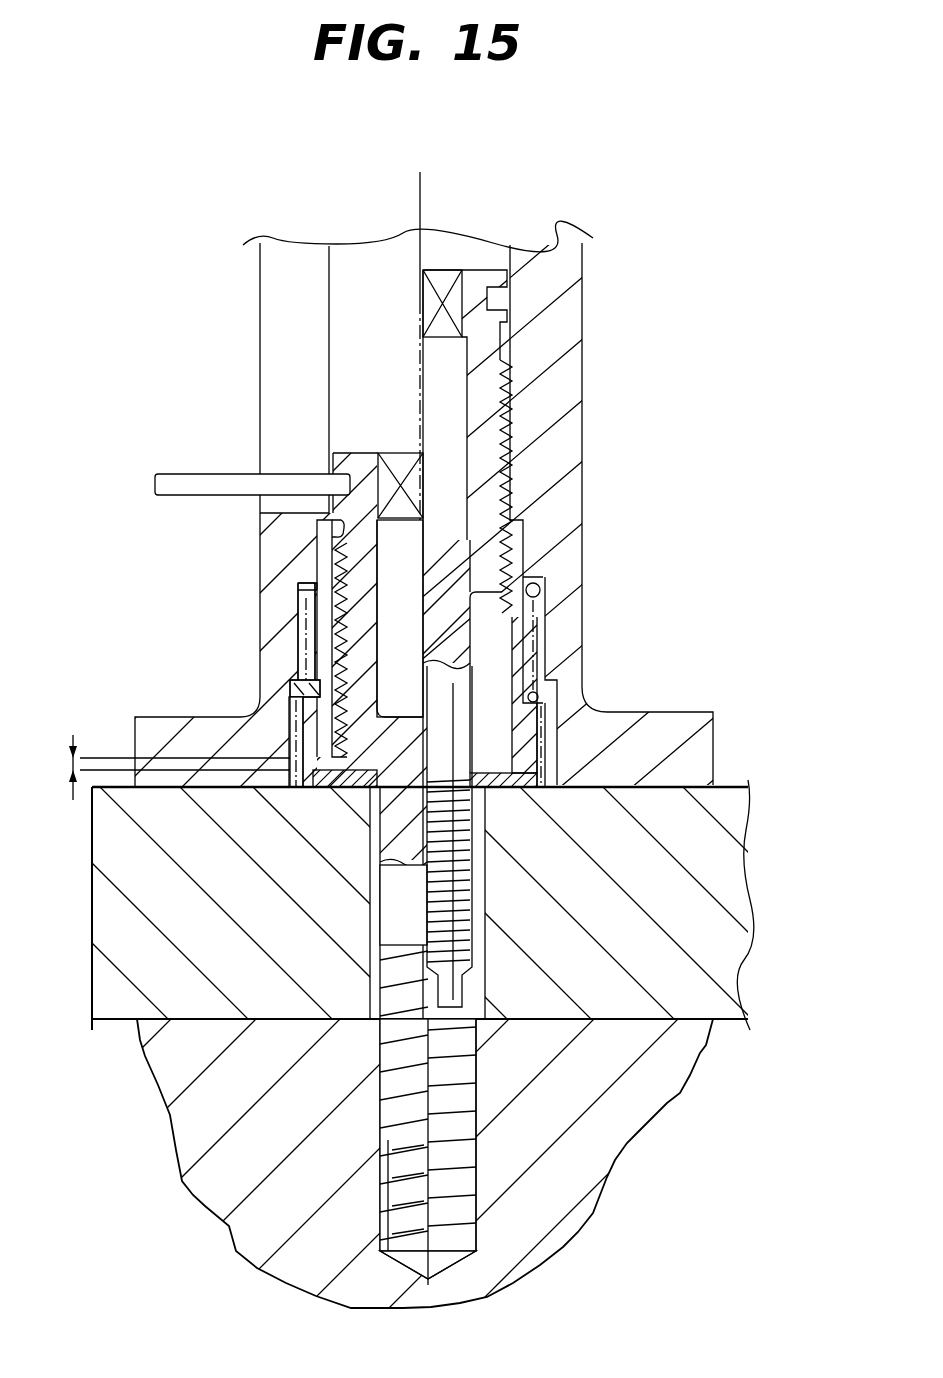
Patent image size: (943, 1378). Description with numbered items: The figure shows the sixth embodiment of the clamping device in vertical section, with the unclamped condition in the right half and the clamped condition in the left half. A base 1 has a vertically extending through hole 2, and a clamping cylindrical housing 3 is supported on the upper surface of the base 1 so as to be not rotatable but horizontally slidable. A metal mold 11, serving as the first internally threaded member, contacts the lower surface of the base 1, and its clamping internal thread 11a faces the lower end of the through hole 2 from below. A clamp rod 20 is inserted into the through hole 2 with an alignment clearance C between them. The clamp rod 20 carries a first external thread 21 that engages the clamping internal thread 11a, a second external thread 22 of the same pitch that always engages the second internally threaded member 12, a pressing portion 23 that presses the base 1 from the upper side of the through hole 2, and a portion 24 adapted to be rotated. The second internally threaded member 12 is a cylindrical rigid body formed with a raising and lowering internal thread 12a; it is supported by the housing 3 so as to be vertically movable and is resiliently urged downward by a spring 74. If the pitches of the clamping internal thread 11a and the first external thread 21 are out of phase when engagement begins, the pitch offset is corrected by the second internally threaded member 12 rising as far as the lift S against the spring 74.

The base 1 is at (737, 825).
The through hole 2 is at (486, 868).
The clamping cylindrical housing 3 is at (592, 412).
The metal mold 11 is at (654, 1101).
The clamping internal thread 11a is at (478, 1093).
The second internally threaded member 12 is at (305, 565).
The raising and lowering internal thread 12a is at (330, 532).
The clamp rod 20 is at (370, 936).
The first external thread 21 is at (472, 932).
The second external thread 22 is at (512, 378).
The pressing portion 23 is at (357, 760).
The portion adapted to be rotated 24 is at (397, 453).
The spring 74 is at (290, 687).
The alignment clearance C is at (358, 892).
The lift S is at (158, 767).